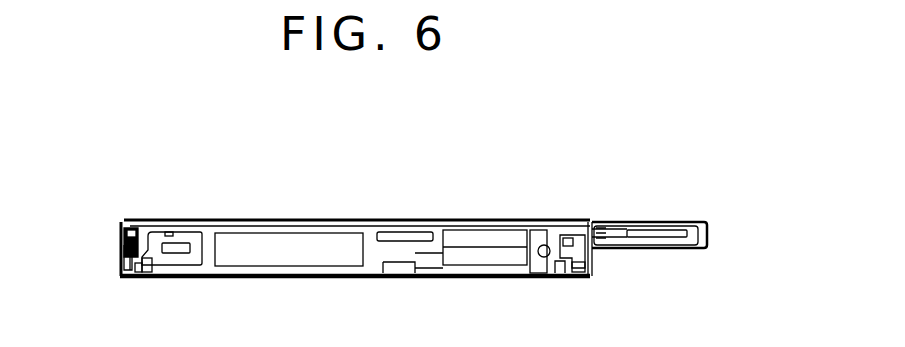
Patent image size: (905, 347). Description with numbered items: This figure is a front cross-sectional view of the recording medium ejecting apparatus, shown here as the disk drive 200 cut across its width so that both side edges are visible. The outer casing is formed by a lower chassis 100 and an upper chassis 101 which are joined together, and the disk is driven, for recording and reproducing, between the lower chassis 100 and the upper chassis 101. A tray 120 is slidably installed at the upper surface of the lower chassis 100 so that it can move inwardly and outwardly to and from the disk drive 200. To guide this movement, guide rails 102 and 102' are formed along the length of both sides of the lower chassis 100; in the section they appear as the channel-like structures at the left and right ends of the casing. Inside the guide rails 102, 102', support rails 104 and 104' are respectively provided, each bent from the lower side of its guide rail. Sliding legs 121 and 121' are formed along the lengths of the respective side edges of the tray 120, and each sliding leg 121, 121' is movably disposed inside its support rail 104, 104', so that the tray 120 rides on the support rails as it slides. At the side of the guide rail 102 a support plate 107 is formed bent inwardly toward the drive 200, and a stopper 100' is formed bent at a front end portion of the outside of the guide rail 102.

The lower chassis 100 is at (363, 273).
The stopper 100' is at (179, 223).
The upper chassis 101 is at (608, 222).
The guide rail 102 is at (97, 257).
The guide rail 102' is at (613, 260).
The support rail 104 is at (122, 293).
The support rail 104' is at (598, 295).
The support plate 107 is at (127, 238).
The tray 120 is at (368, 238).
The sliding leg 121 is at (164, 289).
The sliding leg 121' is at (549, 296).
The disk drive 200 is at (736, 223).